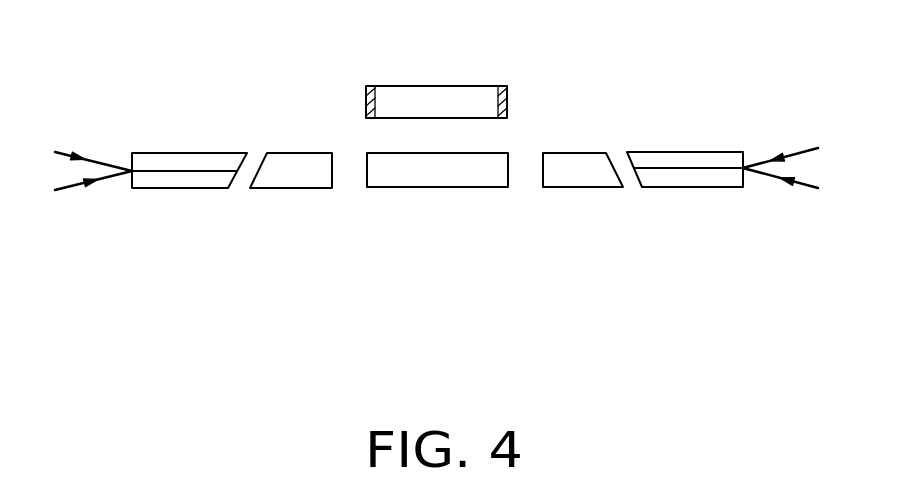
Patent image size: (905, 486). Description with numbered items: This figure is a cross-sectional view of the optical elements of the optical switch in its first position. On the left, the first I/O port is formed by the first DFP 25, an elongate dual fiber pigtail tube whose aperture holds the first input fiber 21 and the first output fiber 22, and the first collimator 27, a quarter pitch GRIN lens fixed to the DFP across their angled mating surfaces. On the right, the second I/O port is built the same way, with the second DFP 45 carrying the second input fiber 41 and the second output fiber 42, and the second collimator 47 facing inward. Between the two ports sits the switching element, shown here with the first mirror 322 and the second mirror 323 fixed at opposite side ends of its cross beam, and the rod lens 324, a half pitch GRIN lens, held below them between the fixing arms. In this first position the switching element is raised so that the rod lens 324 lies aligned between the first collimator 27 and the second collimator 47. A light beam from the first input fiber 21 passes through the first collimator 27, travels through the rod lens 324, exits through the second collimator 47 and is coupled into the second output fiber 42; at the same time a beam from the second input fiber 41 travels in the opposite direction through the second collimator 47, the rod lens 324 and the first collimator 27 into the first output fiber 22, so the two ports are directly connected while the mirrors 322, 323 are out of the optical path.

The first input fiber 21 is at (74, 152).
The first output fiber 22 is at (74, 189).
The first DFP 25 is at (182, 153).
The first collimator 27 is at (290, 153).
The first mirror 322 is at (482, 64).
The second mirror 323 is at (500, 86).
The rod lens 324 is at (428, 187).
The second collimator 47 is at (588, 152).
The second DFP 45 is at (727, 152).
The second output fiber 42 is at (806, 150).
The second input fiber 41 is at (807, 188).